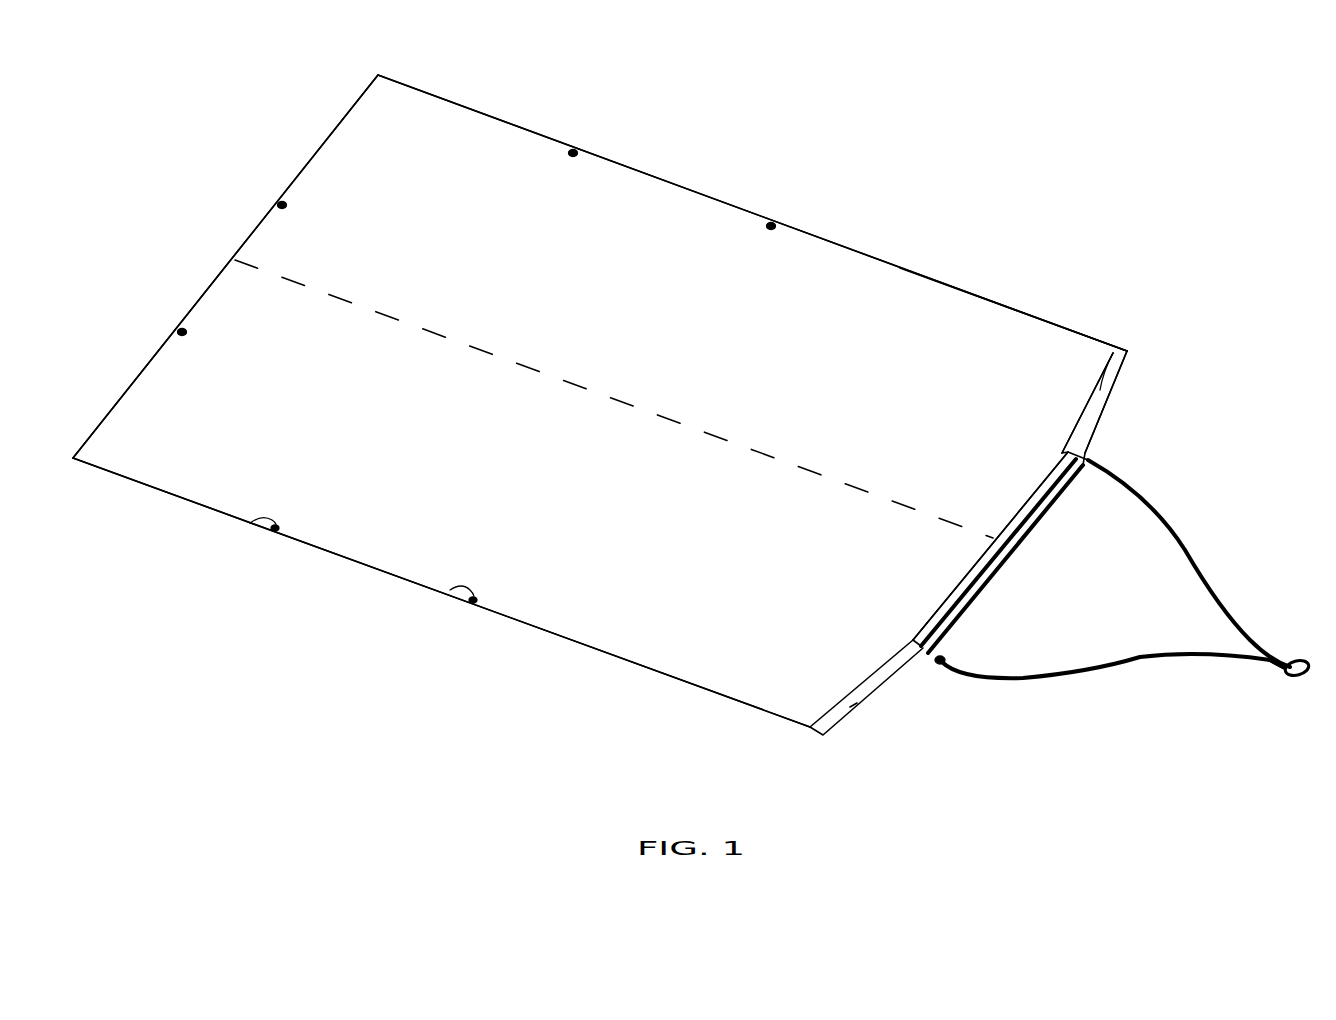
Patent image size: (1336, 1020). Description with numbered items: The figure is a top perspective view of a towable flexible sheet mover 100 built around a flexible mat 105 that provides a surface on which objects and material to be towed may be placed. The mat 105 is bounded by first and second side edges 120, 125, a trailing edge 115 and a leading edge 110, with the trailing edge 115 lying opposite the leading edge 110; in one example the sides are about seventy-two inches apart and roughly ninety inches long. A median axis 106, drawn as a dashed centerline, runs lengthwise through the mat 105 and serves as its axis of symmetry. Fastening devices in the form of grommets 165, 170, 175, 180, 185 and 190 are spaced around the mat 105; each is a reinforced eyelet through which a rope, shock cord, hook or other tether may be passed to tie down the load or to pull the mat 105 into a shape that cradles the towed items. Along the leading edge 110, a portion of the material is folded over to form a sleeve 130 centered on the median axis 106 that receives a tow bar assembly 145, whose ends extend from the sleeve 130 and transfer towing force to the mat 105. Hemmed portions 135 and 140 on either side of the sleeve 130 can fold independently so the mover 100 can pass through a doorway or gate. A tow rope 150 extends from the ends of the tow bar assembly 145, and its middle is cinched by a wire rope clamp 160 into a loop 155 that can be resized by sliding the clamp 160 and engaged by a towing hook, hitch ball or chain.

The towable flexible sheet mover 100 is at (910, 245).
The mat 105 is at (442, 130).
The median axis 106 is at (572, 378).
The leading edge 110 is at (1043, 472).
The trailing edge 115 is at (130, 385).
The first side edge 120 is at (1025, 315).
The second side edge 125 is at (577, 645).
The sleeve 130 is at (1003, 590).
The hemmed portion 135 is at (1127, 351).
The hemmed portion 140 is at (868, 697).
The tow bar assembly 145 is at (928, 668).
The tow rope 150 is at (1212, 605).
The loop 155 is at (1287, 672).
The wire rope clamp 160 is at (1272, 658).
The grommet 165 is at (575, 150).
The grommet 170 is at (772, 224).
The grommet 175 is at (450, 590).
The grommet 180 is at (250, 523).
The grommet 185 is at (182, 330).
The grommet 190 is at (282, 203).